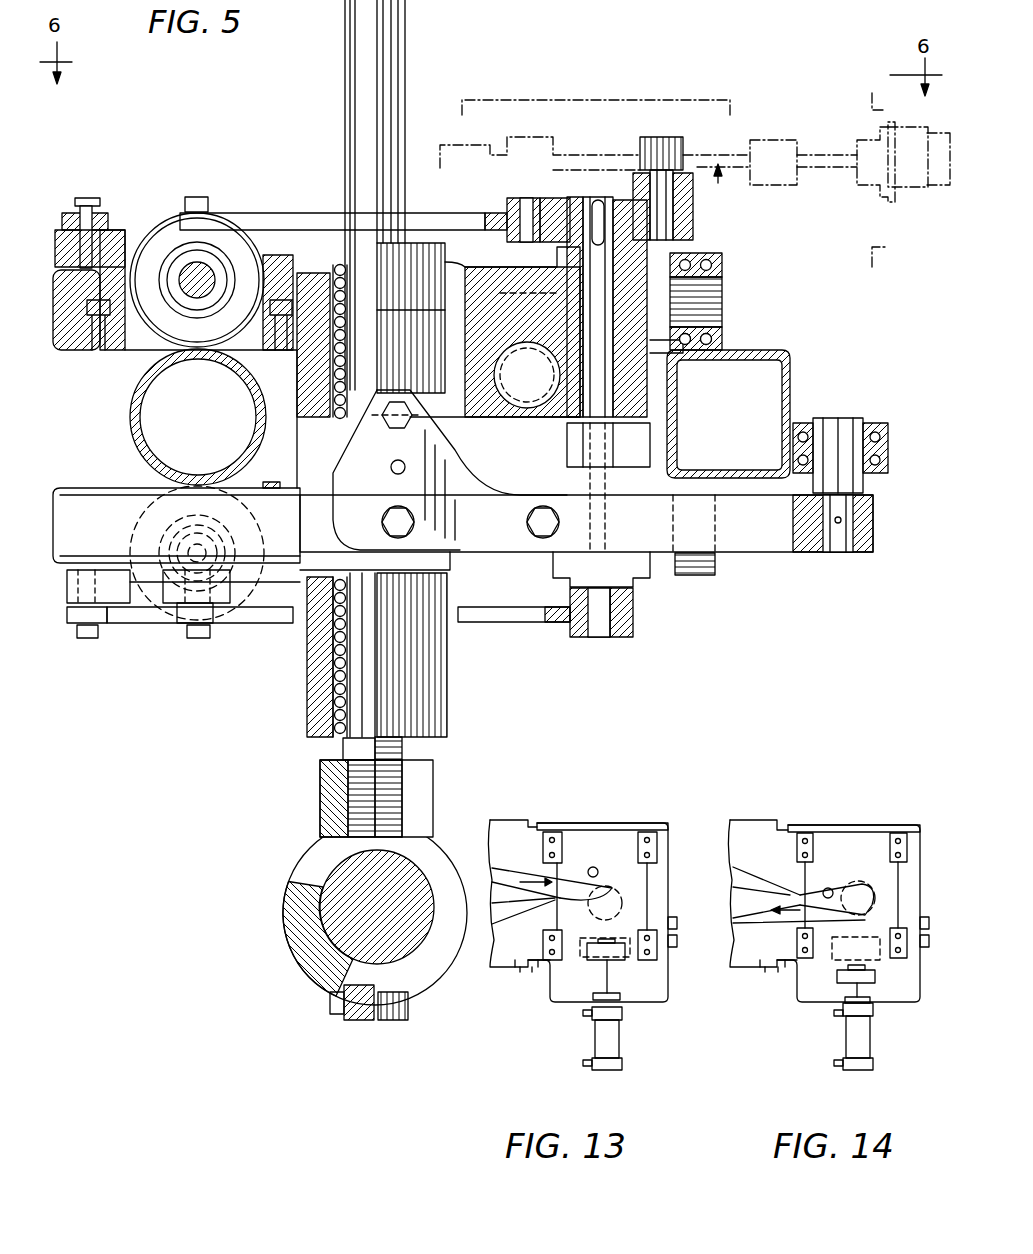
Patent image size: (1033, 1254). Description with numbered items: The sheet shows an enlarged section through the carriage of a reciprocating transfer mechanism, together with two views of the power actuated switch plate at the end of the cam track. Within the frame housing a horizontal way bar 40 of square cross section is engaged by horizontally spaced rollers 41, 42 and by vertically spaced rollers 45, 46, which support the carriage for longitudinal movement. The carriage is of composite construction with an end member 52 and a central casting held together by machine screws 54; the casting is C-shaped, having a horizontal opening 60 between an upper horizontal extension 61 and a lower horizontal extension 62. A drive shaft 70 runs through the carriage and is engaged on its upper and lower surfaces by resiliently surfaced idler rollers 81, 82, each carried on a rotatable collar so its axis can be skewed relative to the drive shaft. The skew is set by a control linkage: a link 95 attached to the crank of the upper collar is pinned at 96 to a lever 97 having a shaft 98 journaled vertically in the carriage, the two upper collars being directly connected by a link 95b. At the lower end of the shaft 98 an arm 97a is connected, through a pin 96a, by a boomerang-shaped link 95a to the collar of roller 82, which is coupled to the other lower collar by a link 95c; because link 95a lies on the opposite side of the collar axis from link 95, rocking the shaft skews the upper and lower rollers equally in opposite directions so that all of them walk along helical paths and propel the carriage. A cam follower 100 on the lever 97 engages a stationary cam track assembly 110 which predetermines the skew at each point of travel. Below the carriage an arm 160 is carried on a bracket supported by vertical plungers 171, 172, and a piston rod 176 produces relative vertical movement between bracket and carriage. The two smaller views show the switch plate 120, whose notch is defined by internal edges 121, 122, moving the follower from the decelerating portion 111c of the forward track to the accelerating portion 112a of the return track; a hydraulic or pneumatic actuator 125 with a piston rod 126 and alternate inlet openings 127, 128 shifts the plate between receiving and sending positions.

In FIG. 5, the way bar 40 is at (792, 393).
In FIG. 5, the roller 41 is at (577, 452).
In FIG. 5, the roller 42 is at (888, 437).
In FIG. 5, the roller 45 is at (703, 257).
In FIG. 5, the roller 46 is at (693, 577).
In FIG. 5, the end member 52 is at (465, 547).
In FIG. 5, the machine screws 54 is at (383, 520).
In FIG. 5, the horizontal opening 60 is at (98, 432).
In FIG. 5, the upper horizontal extension 61 is at (68, 350).
In FIG. 5, the lower horizontal extension 62 is at (97, 487).
In FIG. 5, the drive shaft 70 is at (132, 405).
In FIG. 5, the idler roller 81 is at (162, 240).
In FIG. 5, the idler roller 82 is at (153, 600).
In FIG. 5, the link 95 is at (257, 214).
In FIG. 5, the boomerang-shaped link 95a is at (248, 622).
In FIG. 5, the link 95b is at (107, 178).
In FIG. 5, the link 95c is at (72, 630).
In FIG. 5, the pin 96 is at (527, 200).
In FIG. 5, the pin 96a is at (593, 638).
In FIG. 5, the lever 97 is at (553, 200).
In FIG. 5, the arm 97a is at (622, 637).
In FIG. 5, the shaft 98 is at (605, 393).
In FIG. 5, the cam follower 100 is at (667, 148).
In FIG. 5, the cam track assembly 110 is at (718, 185).
In FIG. 5, the arm 160 is at (337, 917).
In FIG. 5, the vertical plunger 171 is at (343, 748).
In FIG. 5, the vertical plunger 172 is at (405, 752).
In FIG. 5, the piston rod 176 is at (362, 788).
In FIG. 13, the decelerating portion 111c is at (510, 870).
In FIG. 14, the decelerating portion 111c is at (758, 867).
In FIG. 13, the accelerating portion 112a is at (497, 913).
In FIG. 14, the accelerating portion 112a is at (745, 912).
In FIG. 13, the switch plate 120 is at (588, 845).
In FIG. 14, the switch plate 120 is at (842, 850).
In FIG. 13, the internal edge 121 is at (585, 905).
In FIG. 14, the internal edge 121 is at (813, 912).
In FIG. 13, the internal edge 122 is at (592, 868).
In FIG. 14, the internal edge 122 is at (838, 893).
In FIG. 13, the actuator 125 is at (622, 1043).
In FIG. 14, the actuator 125 is at (873, 1040).
In FIG. 13, the piston rod 126 is at (602, 977).
In FIG. 14, the piston rod 126 is at (850, 992).
In FIG. 13, the inlet opening 128 is at (585, 1013).
In FIG. 14, the inlet opening 128 is at (836, 1013).
In FIG. 13, the inlet opening 127 is at (583, 1066).
In FIG. 14, the inlet opening 127 is at (834, 1066).